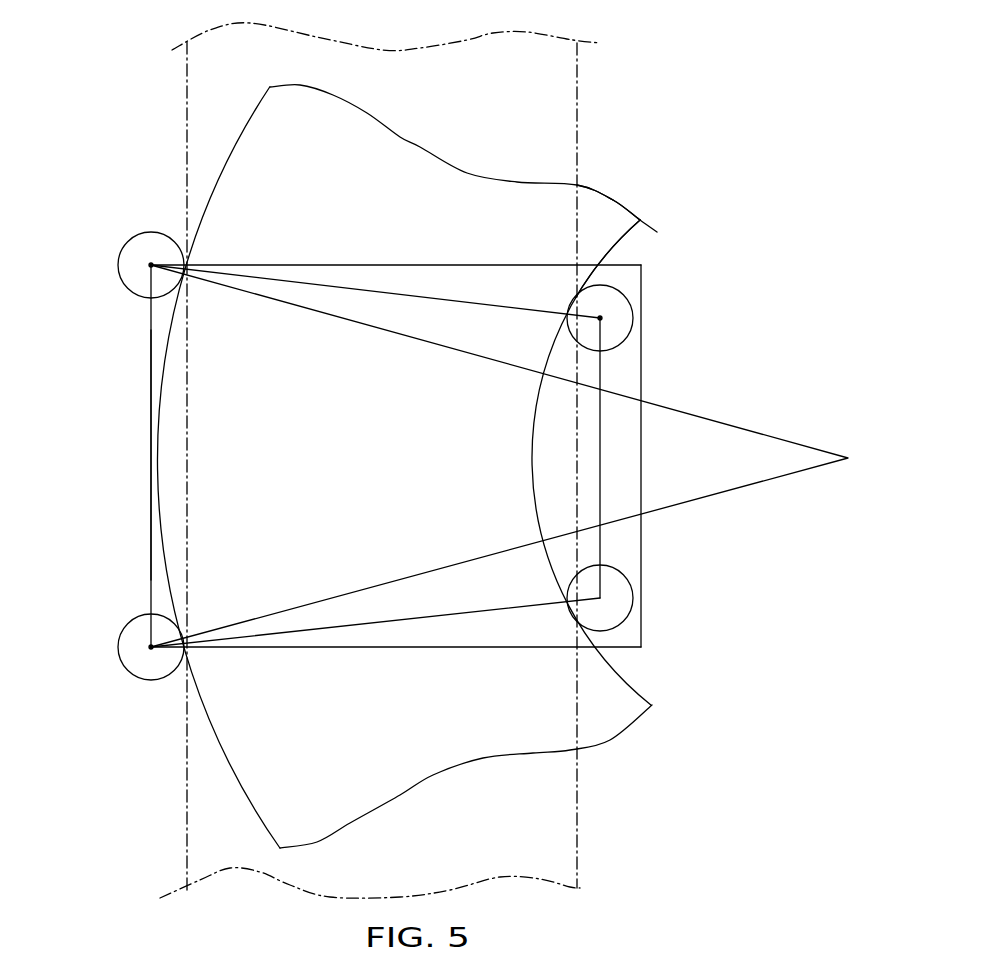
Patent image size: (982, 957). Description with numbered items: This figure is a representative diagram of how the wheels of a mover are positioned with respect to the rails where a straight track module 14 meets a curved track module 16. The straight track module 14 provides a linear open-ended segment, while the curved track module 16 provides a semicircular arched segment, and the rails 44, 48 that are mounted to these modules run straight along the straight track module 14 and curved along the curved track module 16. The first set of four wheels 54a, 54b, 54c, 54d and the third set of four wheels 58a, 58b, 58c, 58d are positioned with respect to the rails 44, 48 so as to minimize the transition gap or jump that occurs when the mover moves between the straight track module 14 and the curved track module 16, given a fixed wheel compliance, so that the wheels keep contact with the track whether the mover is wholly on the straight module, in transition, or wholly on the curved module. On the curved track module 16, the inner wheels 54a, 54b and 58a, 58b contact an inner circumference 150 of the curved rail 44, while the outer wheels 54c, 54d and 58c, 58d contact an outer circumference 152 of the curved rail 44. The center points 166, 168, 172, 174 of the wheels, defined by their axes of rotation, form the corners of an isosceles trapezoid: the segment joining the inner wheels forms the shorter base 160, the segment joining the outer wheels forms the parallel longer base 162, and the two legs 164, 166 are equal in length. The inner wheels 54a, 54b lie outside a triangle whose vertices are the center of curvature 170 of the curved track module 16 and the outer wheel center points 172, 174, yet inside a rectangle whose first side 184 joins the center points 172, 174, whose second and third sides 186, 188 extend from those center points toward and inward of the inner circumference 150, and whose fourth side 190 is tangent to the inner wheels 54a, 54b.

The straight track module 14 is at (596, 108).
The curved track module 16 is at (602, 182).
The rail 44 is at (408, 452).
The rail 48 is at (384, 50).
The inner wheel 54a is at (664, 598).
The inner wheel 54b is at (663, 309).
The outer wheel 54c is at (119, 617).
The outer wheel 54d is at (127, 222).
The inner wheel 58a is at (618, 582).
The inner wheel 58b is at (616, 300).
The outer wheel 58c is at (117, 648).
The outer wheel 58d is at (116, 262).
The inner circumference 150 is at (622, 238).
The outer circumference 152 is at (233, 147).
The shorter base 160 is at (602, 458).
The longer base 162 is at (152, 403).
The first leg 164 is at (380, 620).
The second leg 166 is at (388, 292).
The center point 168 is at (606, 309).
The center of curvature 170 is at (848, 458).
The center point 172 is at (151, 647).
The center point 174 is at (151, 264).
The first side 184 is at (151, 455).
The second side 186 is at (391, 648).
The third side 188 is at (400, 265).
The fourth side 190 is at (643, 458).